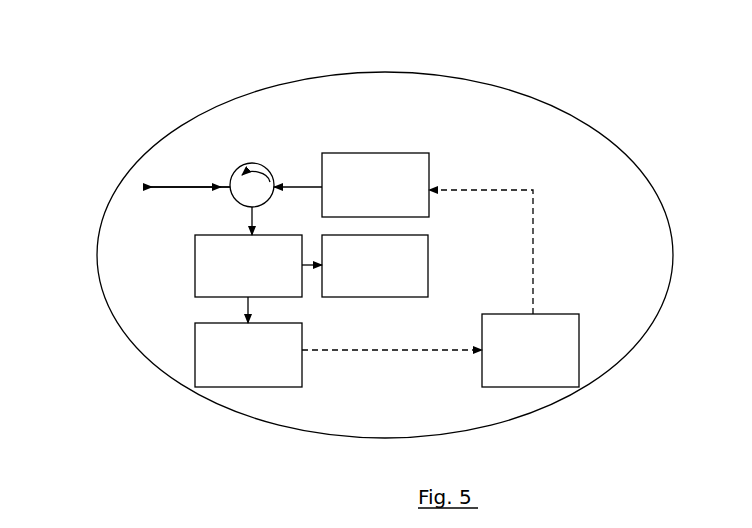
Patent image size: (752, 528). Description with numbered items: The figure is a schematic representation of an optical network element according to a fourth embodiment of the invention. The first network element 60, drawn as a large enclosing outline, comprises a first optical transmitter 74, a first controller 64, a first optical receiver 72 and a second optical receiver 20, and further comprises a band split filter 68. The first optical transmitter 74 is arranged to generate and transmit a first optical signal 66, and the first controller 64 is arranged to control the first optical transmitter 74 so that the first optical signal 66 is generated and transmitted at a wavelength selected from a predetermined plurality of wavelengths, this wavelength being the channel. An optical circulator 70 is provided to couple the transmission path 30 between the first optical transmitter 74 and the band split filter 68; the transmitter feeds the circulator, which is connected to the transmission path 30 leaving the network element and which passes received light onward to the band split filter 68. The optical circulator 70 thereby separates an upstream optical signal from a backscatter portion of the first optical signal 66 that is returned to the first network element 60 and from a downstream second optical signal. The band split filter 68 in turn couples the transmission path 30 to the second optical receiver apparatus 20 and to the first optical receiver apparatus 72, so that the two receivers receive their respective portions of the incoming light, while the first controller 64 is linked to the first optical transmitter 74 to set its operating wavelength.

The first network element 60 is at (577, 106).
The first optical transmitter 74 is at (357, 180).
The optical circulator 70 is at (250, 163).
The first optical signal 66 is at (197, 187).
The transmission path 30 is at (173, 189).
The band split filter 68 is at (205, 273).
The second optical receiver 20 is at (377, 278).
The first optical receiver 72 is at (212, 368).
The first controller 64 is at (542, 367).